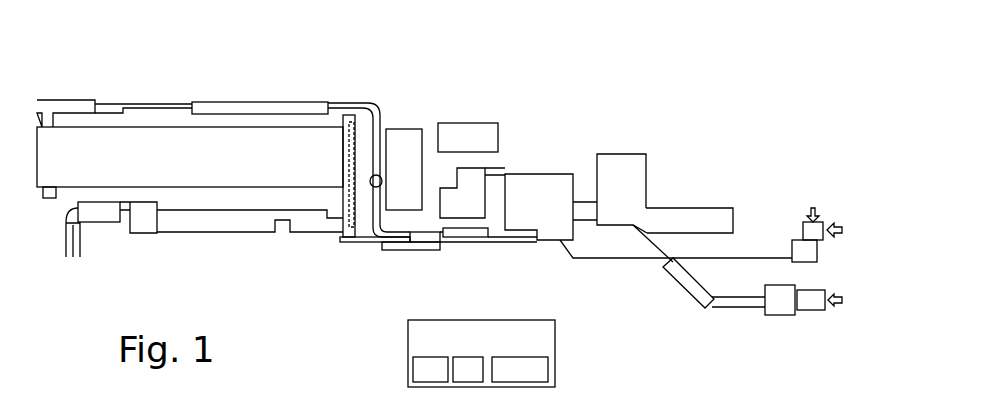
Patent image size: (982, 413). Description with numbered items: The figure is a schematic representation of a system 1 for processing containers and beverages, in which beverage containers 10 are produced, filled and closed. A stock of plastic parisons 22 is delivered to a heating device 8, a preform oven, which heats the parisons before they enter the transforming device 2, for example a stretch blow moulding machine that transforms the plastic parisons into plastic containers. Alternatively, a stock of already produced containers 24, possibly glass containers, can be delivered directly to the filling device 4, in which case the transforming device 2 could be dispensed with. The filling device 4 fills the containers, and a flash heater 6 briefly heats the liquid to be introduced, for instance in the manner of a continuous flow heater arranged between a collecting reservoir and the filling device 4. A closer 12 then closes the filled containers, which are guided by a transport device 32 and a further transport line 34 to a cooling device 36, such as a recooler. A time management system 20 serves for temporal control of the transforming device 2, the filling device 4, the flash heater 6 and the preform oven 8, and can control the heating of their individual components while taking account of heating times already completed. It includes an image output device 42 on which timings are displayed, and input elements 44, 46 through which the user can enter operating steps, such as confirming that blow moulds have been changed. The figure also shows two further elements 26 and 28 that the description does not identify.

The system 1 is at (576, 100).
The transforming device 2 is at (622, 193).
The filling device 4 is at (551, 207).
The flash heater 6 is at (472, 193).
The heating device 8 is at (683, 213).
The beverage containers 10 is at (372, 188).
The closer 12 is at (470, 235).
The time management system 20 is at (463, 352).
The stock of plastic parisons 22 is at (775, 312).
The stock of already produced containers 24 is at (793, 240).
The sensor 26 is at (468, 137).
The heating element 28 is at (404, 169).
The transport device 32 is at (381, 122).
The further transport line 34 is at (296, 107).
The cooling device 36 is at (223, 171).
The image output device 42 is at (520, 369).
The input element 44 is at (430, 369).
The input element 46 is at (468, 369).